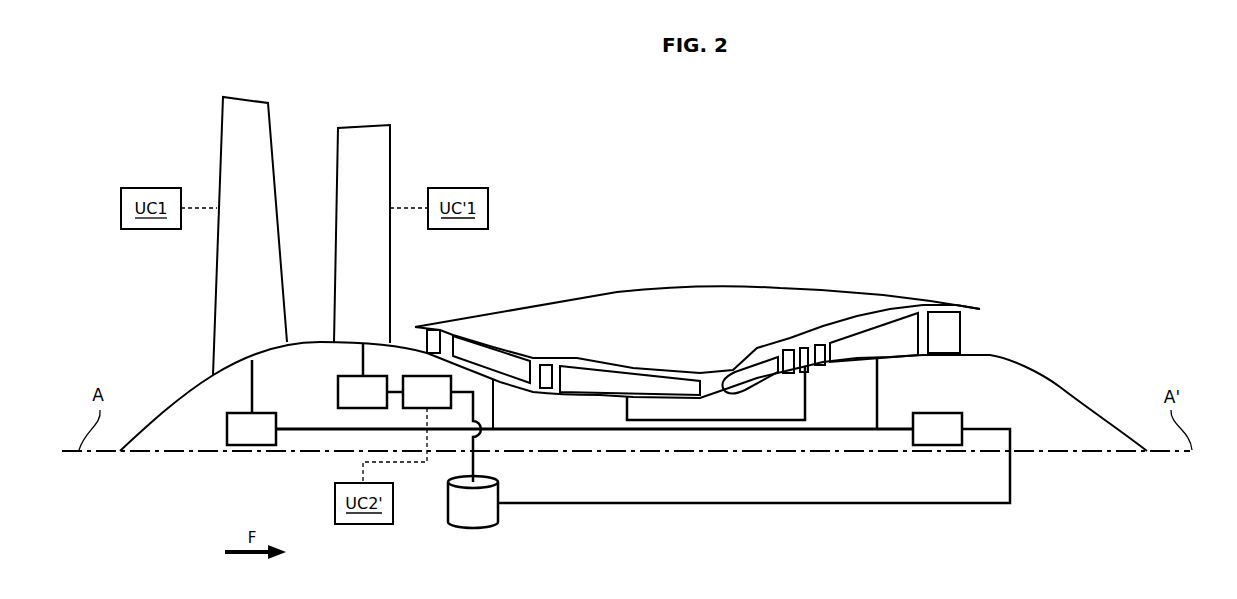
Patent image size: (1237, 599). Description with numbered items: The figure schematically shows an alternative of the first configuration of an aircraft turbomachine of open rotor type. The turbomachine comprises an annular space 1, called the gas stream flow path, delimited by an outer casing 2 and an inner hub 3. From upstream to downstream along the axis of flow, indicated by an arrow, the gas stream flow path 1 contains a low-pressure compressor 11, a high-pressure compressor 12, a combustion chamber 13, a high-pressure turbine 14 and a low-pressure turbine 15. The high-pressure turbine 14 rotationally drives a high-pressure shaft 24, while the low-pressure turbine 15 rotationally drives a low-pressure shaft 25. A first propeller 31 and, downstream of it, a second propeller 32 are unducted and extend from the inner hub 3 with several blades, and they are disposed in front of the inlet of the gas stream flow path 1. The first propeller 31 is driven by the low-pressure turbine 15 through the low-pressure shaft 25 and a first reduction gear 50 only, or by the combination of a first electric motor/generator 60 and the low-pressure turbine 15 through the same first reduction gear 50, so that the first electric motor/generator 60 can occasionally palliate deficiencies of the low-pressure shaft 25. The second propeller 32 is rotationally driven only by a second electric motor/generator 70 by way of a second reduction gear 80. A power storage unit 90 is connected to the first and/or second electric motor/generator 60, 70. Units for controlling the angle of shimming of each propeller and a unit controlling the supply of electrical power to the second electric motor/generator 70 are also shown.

The annular space 1 is at (1000, 332).
The outer casing 2 is at (686, 340).
The inner hub 3 is at (984, 417).
The low-pressure compressor 11 is at (497, 356).
The high-pressure compressor 12 is at (627, 383).
The combustion chamber 13 is at (753, 373).
The high-pressure turbine 14 is at (806, 353).
The low-pressure turbine 15 is at (877, 345).
The high-pressure shaft 24 is at (808, 400).
The low-pressure shaft 25 is at (880, 400).
The first propeller 31 is at (246, 98).
The second propeller 32 is at (361, 126).
The first reduction gear 50 is at (243, 439).
The first electric motor/generator 60 is at (928, 439).
The second electric motor/generator 70 is at (418, 402).
The second reduction gear 80 is at (354, 402).
The power storage unit 90 is at (464, 515).